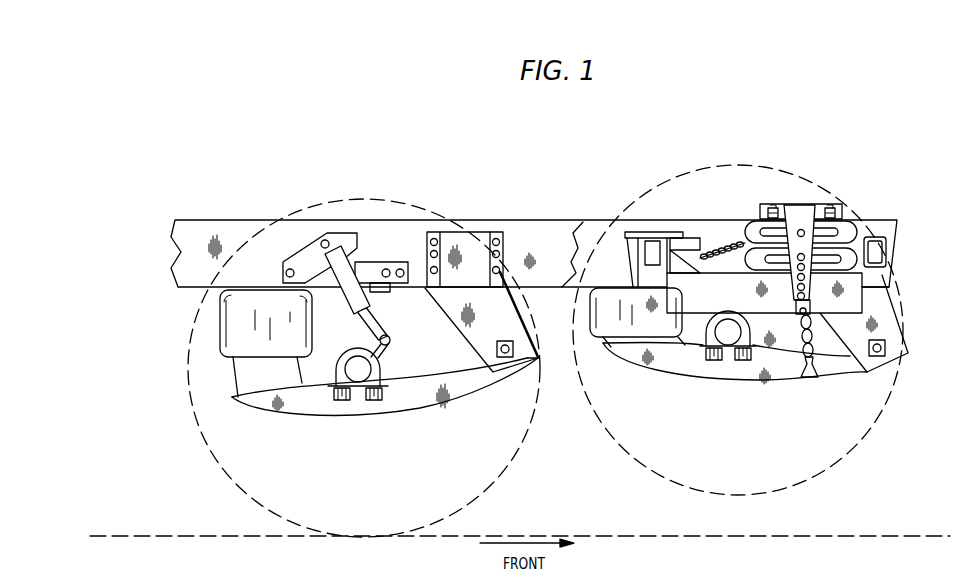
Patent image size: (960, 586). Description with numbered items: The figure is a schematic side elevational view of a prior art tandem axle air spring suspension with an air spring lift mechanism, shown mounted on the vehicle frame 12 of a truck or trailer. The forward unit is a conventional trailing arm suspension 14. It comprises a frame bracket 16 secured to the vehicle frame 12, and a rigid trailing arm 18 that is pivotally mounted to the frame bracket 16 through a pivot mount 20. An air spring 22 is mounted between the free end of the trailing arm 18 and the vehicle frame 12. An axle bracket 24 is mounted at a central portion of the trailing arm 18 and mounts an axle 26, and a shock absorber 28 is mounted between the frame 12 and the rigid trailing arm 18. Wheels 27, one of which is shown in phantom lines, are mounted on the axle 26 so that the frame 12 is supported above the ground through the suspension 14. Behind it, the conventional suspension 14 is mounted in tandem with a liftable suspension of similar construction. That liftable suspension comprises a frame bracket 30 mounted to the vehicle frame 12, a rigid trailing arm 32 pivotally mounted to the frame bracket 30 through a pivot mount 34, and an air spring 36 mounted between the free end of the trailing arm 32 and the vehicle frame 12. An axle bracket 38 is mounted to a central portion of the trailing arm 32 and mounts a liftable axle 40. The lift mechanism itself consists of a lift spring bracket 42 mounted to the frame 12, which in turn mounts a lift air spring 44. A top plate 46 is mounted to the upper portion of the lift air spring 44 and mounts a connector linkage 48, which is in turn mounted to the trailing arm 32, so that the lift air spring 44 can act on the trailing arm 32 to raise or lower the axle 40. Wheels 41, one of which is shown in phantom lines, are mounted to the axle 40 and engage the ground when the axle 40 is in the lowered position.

The vehicle frame 12 is at (532, 233).
The trailing arm suspension 14 is at (284, 158).
The frame bracket 16 is at (497, 306).
The rigid trailing arm 18 is at (473, 388).
The pivot mount 20 is at (528, 358).
The air spring 22 is at (223, 332).
The axle bracket 24 is at (332, 380).
The axle 26 is at (358, 373).
The wheels 27 is at (225, 473).
The shock absorber 28 is at (372, 258).
The frame bracket 30 is at (880, 313).
The rigid trailing arm 32 is at (788, 372).
The pivot mount 34 is at (885, 356).
The air spring 36 is at (598, 316).
The axle bracket 38 is at (690, 347).
The liftable axle 40 is at (727, 342).
The wheels 41 is at (848, 450).
The lift spring bracket 42 is at (740, 302).
The lift air spring 44 is at (845, 228).
The top plate 46 is at (757, 218).
The connector linkage 48 is at (812, 340).